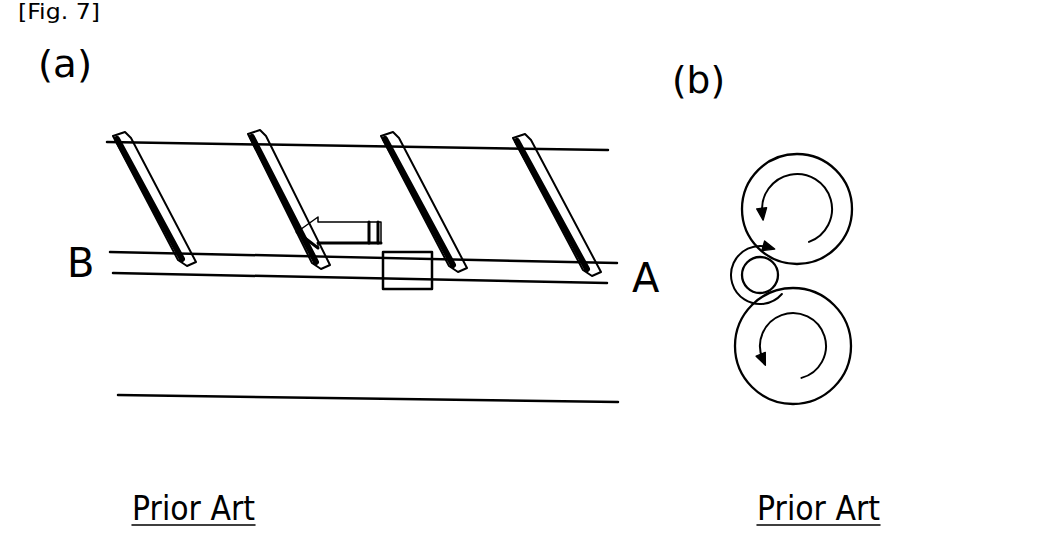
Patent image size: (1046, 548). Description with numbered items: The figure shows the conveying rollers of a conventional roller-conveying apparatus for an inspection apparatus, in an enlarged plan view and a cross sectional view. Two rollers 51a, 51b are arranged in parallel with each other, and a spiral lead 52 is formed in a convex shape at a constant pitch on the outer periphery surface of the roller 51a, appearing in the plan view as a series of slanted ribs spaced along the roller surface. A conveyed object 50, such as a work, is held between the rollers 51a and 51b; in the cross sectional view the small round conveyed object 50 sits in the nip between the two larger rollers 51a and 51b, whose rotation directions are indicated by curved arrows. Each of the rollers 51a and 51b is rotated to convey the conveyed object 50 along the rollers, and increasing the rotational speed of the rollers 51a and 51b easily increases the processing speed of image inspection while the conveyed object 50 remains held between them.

The conveyed object 50 is at (413, 290).
The roller 51a is at (313, 145).
The roller 51b is at (305, 397).
The spiral lead 52 is at (117, 133).